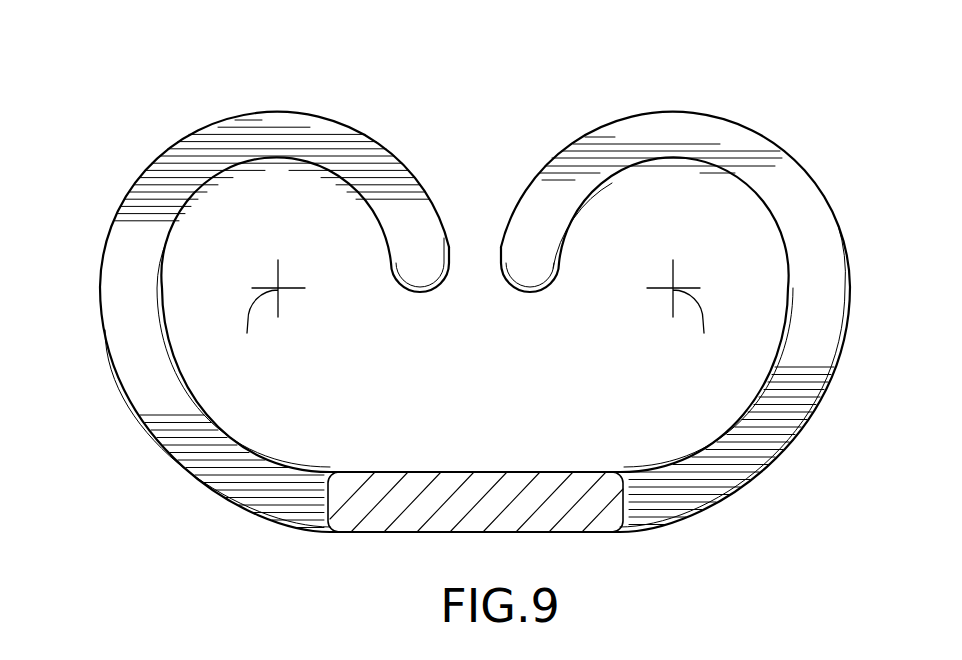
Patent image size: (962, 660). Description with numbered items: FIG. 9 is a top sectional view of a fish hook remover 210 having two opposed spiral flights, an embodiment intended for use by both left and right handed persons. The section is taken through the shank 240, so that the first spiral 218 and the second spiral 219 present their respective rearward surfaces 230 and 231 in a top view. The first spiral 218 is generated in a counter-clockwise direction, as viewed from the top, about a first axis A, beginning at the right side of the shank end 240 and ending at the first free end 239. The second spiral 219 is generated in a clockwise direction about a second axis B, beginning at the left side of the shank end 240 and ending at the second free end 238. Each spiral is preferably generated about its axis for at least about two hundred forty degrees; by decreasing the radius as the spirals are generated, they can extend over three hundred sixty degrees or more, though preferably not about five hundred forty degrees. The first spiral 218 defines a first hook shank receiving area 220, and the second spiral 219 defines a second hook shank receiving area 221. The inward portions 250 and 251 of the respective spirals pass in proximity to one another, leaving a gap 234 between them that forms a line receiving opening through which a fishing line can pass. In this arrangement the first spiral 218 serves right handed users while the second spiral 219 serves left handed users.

The hook remover 210 is at (158, 78).
The first spiral 218 is at (826, 185).
The second spiral 219 is at (95, 232).
The first hook shank receiving area 220 is at (745, 256).
The second hook shank receiving area 221 is at (210, 259).
The rearward surface 230 is at (678, 133).
The rearward surface 231 is at (283, 142).
The gap 234 is at (475, 257).
The second free end 238 is at (427, 293).
The first free end 239 is at (523, 293).
The shank 240 is at (410, 533).
The inward portion 250 is at (502, 237).
The inward portion 251 is at (448, 229).